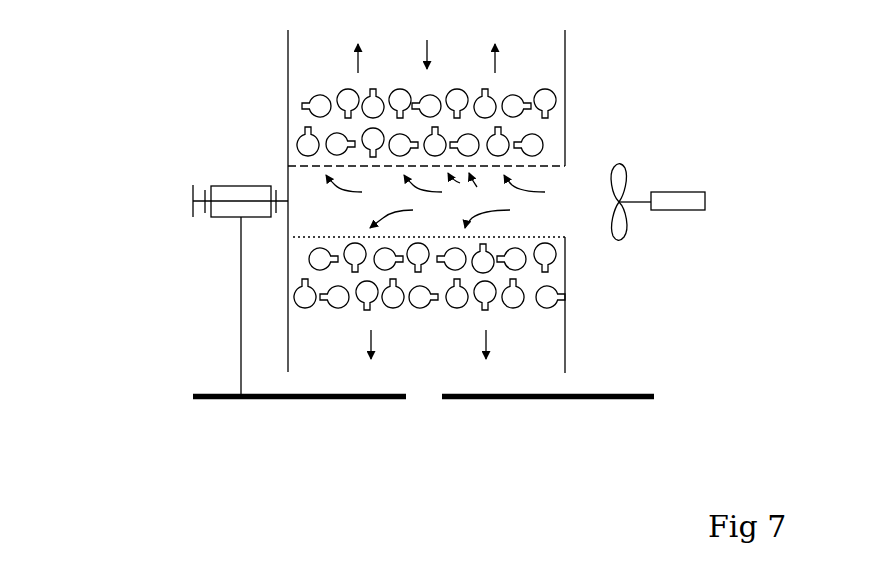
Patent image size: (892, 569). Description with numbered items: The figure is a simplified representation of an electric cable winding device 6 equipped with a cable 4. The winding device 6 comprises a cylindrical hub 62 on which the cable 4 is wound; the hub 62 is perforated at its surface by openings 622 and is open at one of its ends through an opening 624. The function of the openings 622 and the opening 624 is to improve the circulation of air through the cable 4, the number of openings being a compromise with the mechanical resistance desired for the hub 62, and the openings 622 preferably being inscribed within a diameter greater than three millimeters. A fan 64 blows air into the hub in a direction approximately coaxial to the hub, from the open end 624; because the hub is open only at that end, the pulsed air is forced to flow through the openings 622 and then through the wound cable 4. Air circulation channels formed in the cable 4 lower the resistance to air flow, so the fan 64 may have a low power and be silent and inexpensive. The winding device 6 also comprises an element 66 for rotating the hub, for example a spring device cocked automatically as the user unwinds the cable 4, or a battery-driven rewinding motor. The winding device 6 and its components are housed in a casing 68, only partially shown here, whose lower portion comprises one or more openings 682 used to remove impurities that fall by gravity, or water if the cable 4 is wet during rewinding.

The cable 4 is at (321, 103).
The electric cable winding device 6 is at (602, 77).
The cylindrical hub 62 is at (305, 234).
The openings 622 is at (426, 149).
The opening 624 is at (553, 216).
The fan 64 is at (637, 201).
The element for rotating the hub 66 is at (227, 192).
The casing 68 is at (633, 394).
The openings 682 is at (427, 406).